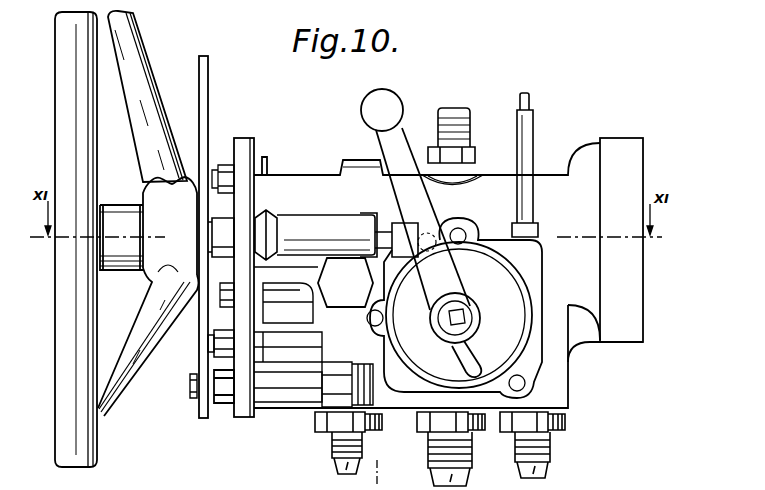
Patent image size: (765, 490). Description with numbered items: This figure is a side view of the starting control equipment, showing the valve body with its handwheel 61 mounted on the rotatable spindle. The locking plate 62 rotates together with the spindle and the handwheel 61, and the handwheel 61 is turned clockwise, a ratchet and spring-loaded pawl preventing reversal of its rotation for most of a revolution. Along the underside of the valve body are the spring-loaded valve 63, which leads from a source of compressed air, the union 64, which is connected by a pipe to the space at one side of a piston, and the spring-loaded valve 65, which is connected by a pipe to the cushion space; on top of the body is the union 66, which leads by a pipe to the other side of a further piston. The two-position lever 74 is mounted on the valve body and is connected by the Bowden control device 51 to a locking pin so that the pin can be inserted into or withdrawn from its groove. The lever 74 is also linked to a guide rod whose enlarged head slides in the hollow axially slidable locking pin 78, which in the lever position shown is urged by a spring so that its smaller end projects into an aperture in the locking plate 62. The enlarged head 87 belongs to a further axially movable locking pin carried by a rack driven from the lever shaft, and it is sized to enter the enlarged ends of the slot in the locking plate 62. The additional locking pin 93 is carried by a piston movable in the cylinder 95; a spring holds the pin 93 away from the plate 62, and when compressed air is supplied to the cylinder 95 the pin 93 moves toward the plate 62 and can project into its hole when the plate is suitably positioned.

The Bowden control device 51 is at (528, 133).
The handwheel 61 is at (146, 53).
The locking plate 62 is at (212, 83).
The spring-loaded valve 63 is at (323, 443).
The union 64 is at (440, 472).
The spring-loaded valve 65 is at (555, 437).
The union 66 is at (470, 128).
The two-position lever 74 is at (420, 206).
The locking pin 78 is at (218, 227).
The enlarged head 87 is at (189, 389).
The additional locking pin 93 is at (200, 345).
The cylinder 95 is at (217, 352).